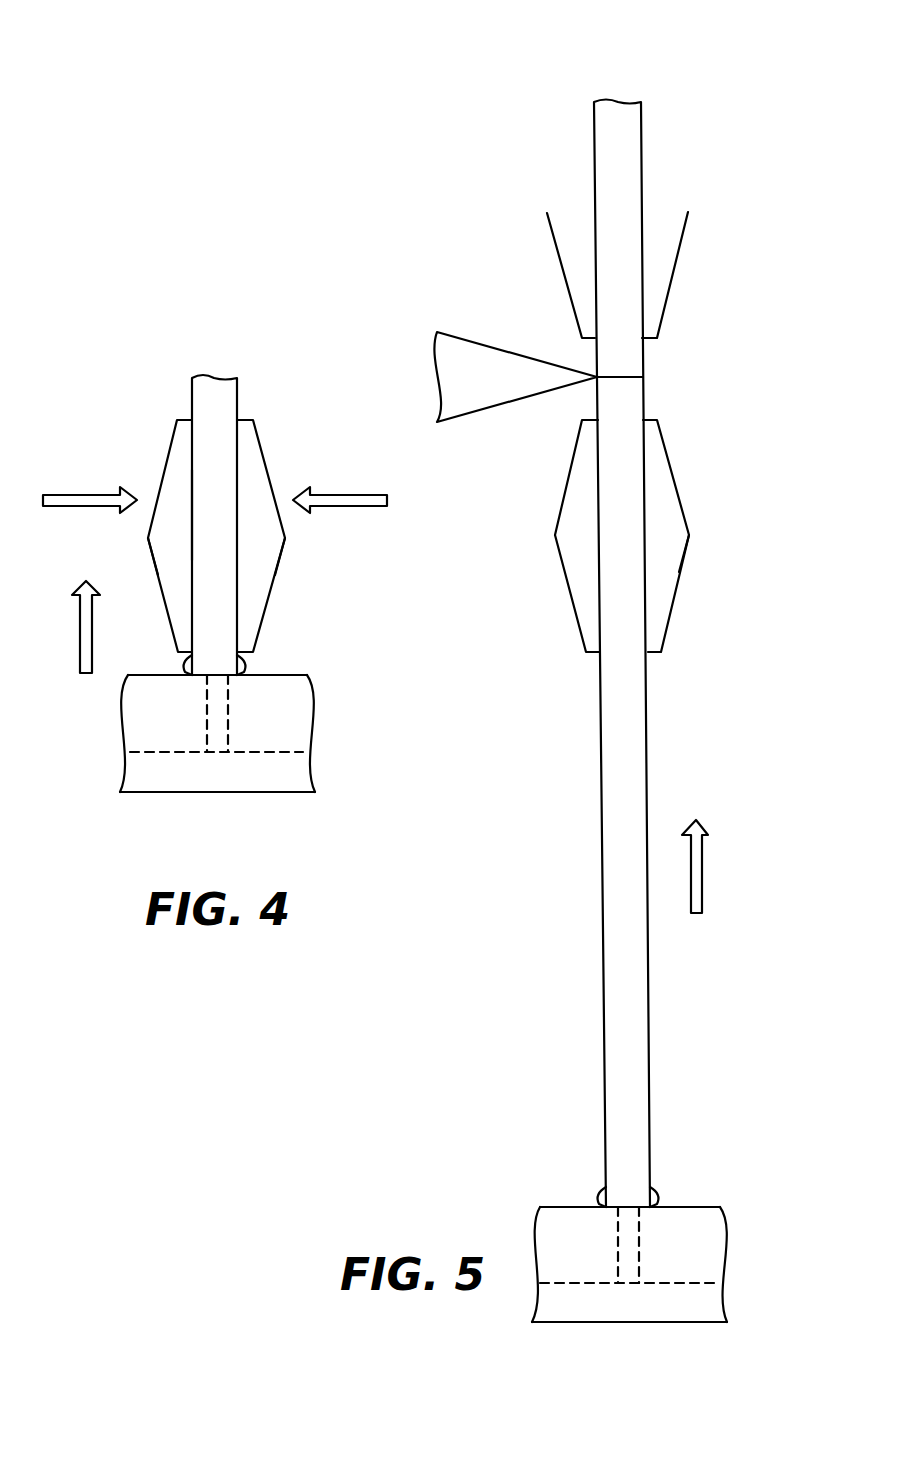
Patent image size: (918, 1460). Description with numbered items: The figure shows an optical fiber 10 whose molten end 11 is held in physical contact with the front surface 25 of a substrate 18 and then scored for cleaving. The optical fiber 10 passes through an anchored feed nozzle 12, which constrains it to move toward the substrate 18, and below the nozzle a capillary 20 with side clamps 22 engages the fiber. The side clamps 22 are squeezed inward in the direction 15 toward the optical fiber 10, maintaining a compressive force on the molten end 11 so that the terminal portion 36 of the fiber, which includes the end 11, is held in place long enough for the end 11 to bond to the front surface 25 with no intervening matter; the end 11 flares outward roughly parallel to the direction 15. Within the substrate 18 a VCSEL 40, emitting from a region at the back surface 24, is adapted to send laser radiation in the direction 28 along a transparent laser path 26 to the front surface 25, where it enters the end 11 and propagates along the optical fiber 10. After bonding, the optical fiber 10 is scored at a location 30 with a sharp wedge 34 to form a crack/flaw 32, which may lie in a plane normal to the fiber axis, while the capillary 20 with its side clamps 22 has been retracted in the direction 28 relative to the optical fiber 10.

In FIG. 4, the optical fiber 10 is at (214, 358).
In FIG. 5, the optical fiber 10 is at (617, 80).
In FIG. 4, the end 11 is at (188, 666).
In FIG. 5, the end 11 is at (607, 1200).
In FIG. 5, the feed nozzle 12 is at (683, 238).
In FIG. 4, the direction 15 is at (67, 497).
In FIG. 4, the substrate 18 is at (345, 732).
In FIG. 5, the substrate 18 is at (760, 1262).
In FIG. 4, the capillary 20 is at (142, 446).
In FIG. 5, the capillary 20 is at (698, 470).
In FIG. 4, the side clamps 22 is at (148, 538).
In FIG. 5, the side clamps 22 is at (690, 535).
In FIG. 4, the back surface 24 is at (295, 793).
In FIG. 5, the back surface 24 is at (705, 1323).
In FIG. 4, the front surface 25 is at (295, 675).
In FIG. 5, the front surface 25 is at (705, 1207).
In FIG. 4, the laser path 26 is at (217, 710).
In FIG. 5, the laser path 26 is at (628, 1241).
In FIG. 4, the direction 28 is at (83, 632).
In FIG. 5, the direction 28 is at (697, 868).
In FIG. 5, the location 30 is at (665, 377).
In FIG. 5, the crack/flaw 32 is at (618, 375).
In FIG. 5, the sharp wedge 34 is at (497, 389).
In FIG. 4, the terminal portion 36 is at (230, 536).
In FIG. 4, the VCSEL 40 is at (260, 783).
In FIG. 5, the VCSEL 40 is at (672, 1313).